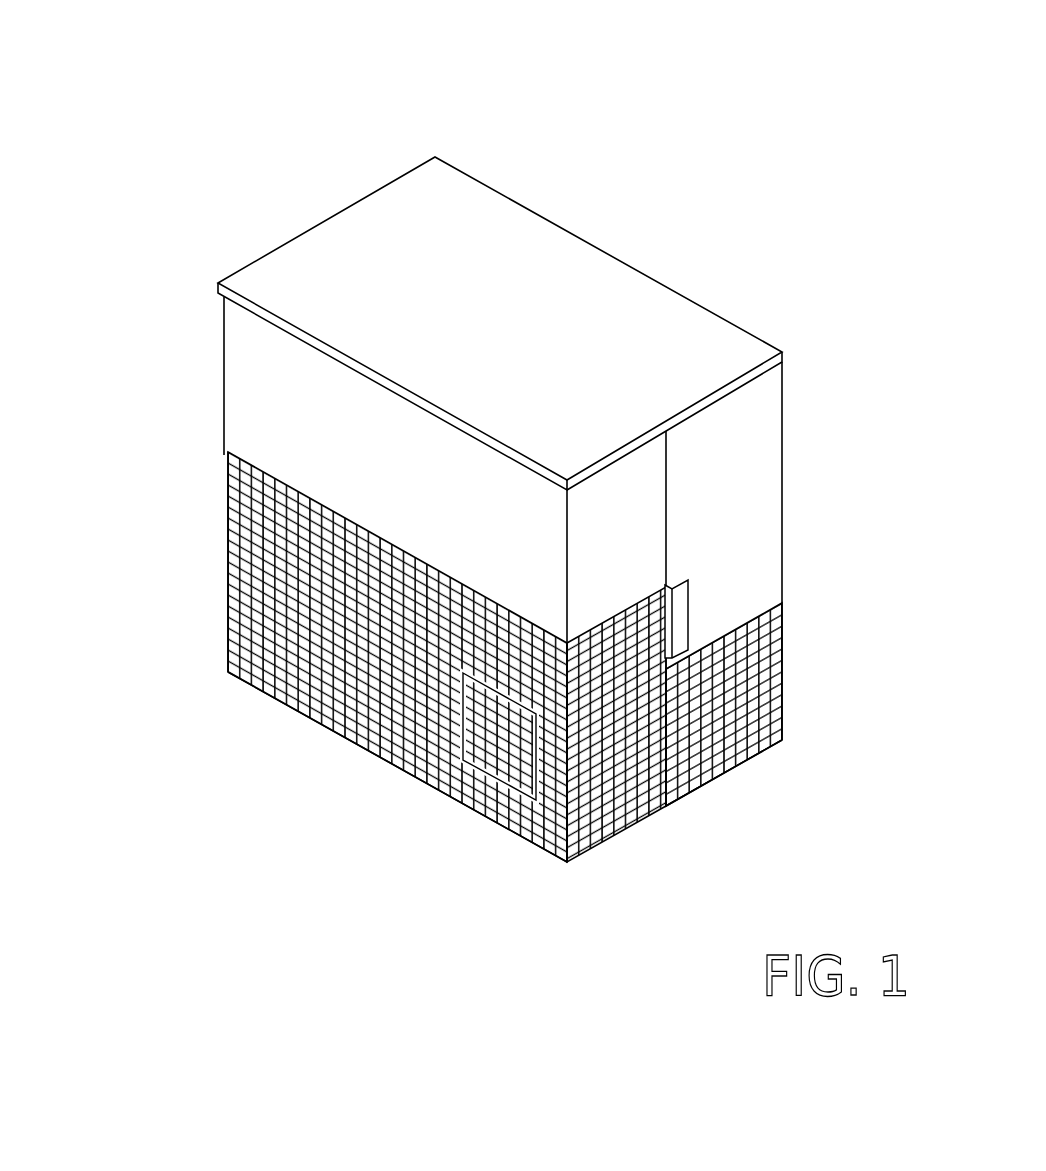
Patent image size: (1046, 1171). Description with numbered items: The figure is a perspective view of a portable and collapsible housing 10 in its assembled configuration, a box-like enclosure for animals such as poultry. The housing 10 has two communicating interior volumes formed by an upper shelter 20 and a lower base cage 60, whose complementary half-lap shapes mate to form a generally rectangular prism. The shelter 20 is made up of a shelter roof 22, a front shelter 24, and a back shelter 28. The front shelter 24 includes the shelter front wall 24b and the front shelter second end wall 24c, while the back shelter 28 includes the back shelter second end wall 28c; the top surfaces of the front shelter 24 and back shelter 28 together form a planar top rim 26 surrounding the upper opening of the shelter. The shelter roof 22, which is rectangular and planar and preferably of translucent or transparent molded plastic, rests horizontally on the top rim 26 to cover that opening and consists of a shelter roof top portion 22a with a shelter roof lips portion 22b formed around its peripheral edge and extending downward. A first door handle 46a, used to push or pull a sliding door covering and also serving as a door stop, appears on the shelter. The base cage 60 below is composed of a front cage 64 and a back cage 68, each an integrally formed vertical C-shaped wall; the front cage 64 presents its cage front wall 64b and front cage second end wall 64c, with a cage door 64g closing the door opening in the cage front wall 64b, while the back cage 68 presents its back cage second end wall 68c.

The portable and collapsible housing 10 is at (496, 447).
The shelter 20 is at (533, 509).
The shelter roof 22 is at (510, 323).
The shelter roof top portion 22a is at (477, 207).
The shelter roof lips portion 22b is at (232, 298).
The front shelter 24 is at (441, 579).
The shelter front wall 24b is at (250, 435).
The front shelter second end wall 24c is at (648, 535).
The top rim 26 is at (783, 366).
The back shelter 28 is at (821, 551).
The back shelter second end wall 28c is at (765, 565).
The first door handle 46a is at (678, 620).
The base cage 60 is at (462, 672).
The front cage 64 is at (414, 672).
The cage front wall 64b is at (308, 710).
The front cage second end wall 64c is at (620, 823).
The cage door 64g is at (452, 790).
The back cage 68 is at (769, 705).
The back cage second end wall 68c is at (742, 750).